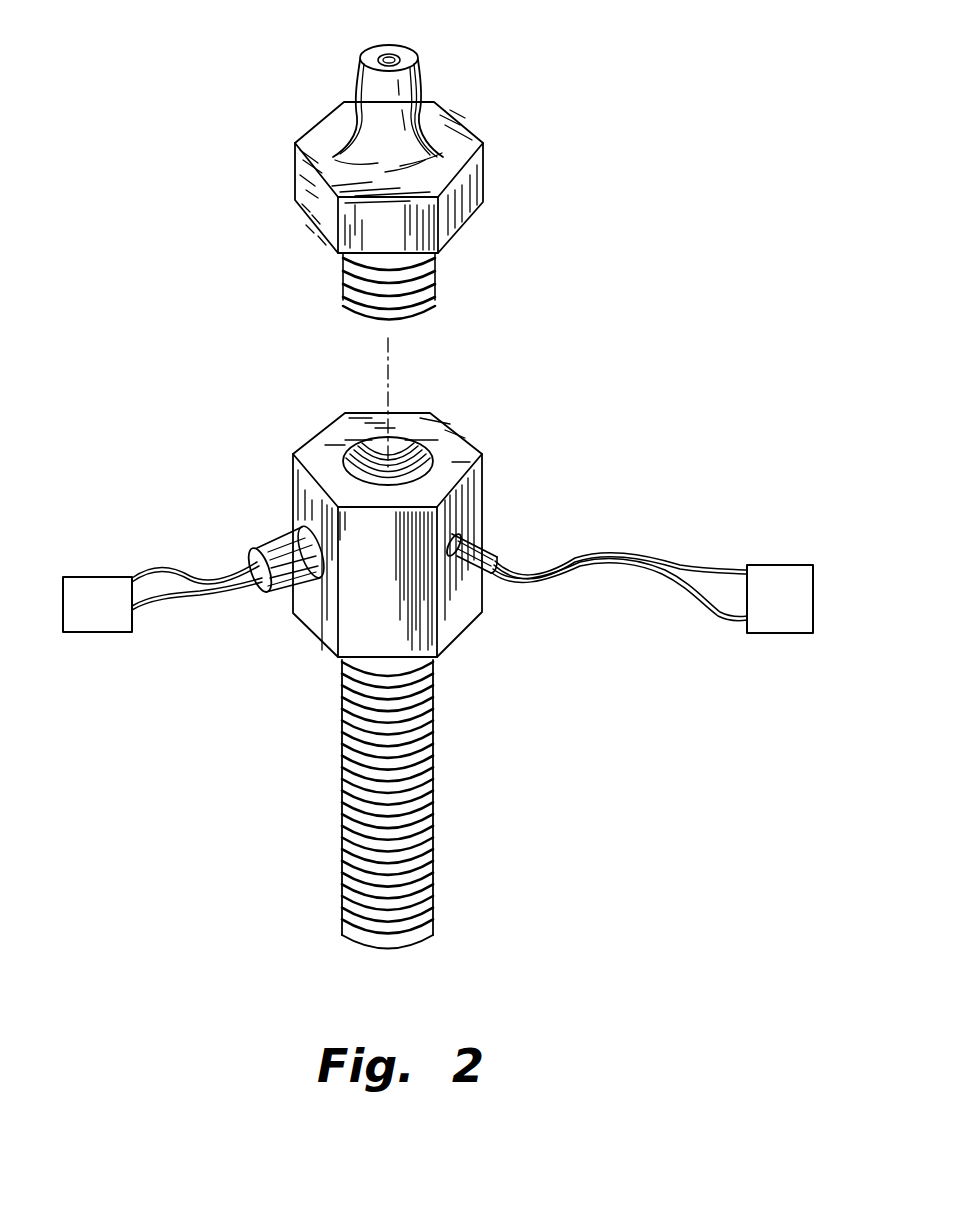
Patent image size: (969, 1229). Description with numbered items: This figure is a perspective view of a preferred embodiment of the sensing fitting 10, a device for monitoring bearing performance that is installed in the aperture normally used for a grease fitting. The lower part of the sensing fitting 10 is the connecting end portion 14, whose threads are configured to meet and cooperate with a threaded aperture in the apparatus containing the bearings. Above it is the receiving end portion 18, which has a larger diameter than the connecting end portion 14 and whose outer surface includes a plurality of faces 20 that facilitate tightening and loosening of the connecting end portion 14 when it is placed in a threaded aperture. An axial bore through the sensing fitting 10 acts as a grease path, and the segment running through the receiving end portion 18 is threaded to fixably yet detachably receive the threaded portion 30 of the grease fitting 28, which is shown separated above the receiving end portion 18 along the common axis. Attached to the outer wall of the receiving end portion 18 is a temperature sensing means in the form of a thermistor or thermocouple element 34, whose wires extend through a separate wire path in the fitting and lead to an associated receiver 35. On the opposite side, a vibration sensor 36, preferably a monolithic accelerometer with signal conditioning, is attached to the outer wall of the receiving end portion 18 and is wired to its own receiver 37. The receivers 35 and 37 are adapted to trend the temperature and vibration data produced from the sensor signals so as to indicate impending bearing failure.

The sensing fitting 10 is at (528, 672).
The connecting end portion 14 is at (434, 797).
The receiving end portion 18 is at (483, 490).
The faces 20 is at (318, 607).
The grease fitting 28 is at (415, 53).
The threaded portion 30 is at (436, 277).
The thermocouple element 34 is at (490, 553).
The receiver 35 is at (783, 565).
The vibration sensor 36 is at (253, 545).
The receiver 37 is at (92, 633).